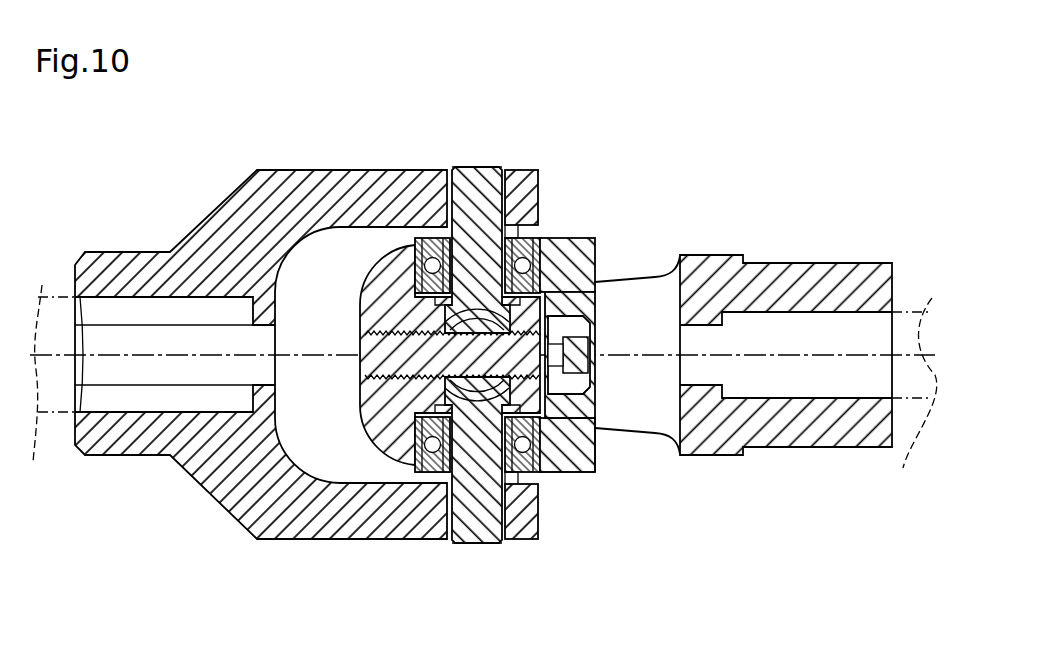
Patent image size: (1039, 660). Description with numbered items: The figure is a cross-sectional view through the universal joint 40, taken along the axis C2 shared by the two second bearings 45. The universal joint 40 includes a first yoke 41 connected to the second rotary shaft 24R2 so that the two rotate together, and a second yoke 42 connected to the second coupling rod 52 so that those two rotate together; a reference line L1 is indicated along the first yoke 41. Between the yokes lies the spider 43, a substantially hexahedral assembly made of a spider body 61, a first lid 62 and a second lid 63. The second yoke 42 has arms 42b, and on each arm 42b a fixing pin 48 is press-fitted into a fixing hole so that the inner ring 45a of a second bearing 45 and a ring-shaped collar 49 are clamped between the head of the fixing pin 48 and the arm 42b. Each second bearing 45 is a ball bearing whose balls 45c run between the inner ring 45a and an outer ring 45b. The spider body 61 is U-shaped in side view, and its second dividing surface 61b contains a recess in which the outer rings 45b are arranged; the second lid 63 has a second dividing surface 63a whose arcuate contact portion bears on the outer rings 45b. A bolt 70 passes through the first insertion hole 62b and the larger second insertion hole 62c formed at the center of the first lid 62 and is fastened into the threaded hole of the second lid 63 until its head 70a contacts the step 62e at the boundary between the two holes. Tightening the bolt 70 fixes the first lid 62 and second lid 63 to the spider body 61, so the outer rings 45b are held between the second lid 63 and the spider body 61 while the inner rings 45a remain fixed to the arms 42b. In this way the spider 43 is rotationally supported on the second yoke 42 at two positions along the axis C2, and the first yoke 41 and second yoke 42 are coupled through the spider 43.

The universal joint 40 is at (681, 150).
The first yoke 41 is at (862, 263).
The second yoke 42 is at (305, 170).
The arm 42b is at (522, 170).
The spider 43 is at (358, 404).
The second bearing 45 is at (572, 240).
The inner ring 45a is at (460, 167).
The outer ring 45b is at (415, 278).
The ball 45c is at (437, 468).
The fixing pin 48 is at (497, 168).
The collar 49 is at (533, 222).
The second coupling rod 52 is at (50, 296).
The spider body 61 is at (540, 240).
The second dividing surface 61b is at (590, 462).
The first lid 62 is at (598, 282).
The first insertion hole 62b is at (595, 433).
The second insertion hole 62c is at (590, 393).
The step 62e is at (585, 318).
The second lid 63 is at (360, 292).
The second dividing surface 63a is at (392, 555).
The bolt 70 is at (590, 348).
The head 70a is at (585, 372).
The axis C2 is at (477, 625).
The bore reference line L1 is at (910, 332).
The second rotary shaft 24R2 is at (907, 484).